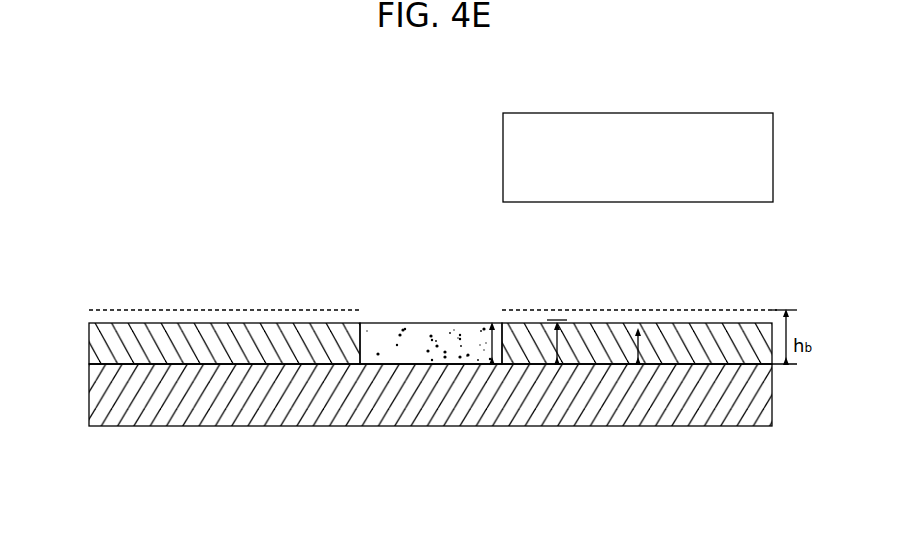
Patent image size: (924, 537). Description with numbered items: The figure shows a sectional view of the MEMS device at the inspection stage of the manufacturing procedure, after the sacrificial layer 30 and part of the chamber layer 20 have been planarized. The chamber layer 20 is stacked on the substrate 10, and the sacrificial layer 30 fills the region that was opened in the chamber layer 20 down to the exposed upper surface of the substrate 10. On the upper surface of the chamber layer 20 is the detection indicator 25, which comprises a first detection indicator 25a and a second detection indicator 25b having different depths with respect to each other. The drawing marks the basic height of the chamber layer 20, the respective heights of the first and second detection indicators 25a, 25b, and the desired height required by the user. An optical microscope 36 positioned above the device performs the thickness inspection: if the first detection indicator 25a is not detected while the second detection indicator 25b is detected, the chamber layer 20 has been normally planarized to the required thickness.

The substrate 10 is at (108, 395).
The chamber layer 20 is at (108, 341).
The detection indicator 25 is at (643, 256).
The first detection indicator 25a is at (557, 310).
The second detection indicator 25b is at (642, 318).
The sacrificial layer 30 is at (422, 340).
The optical microscope 36 is at (773, 157).